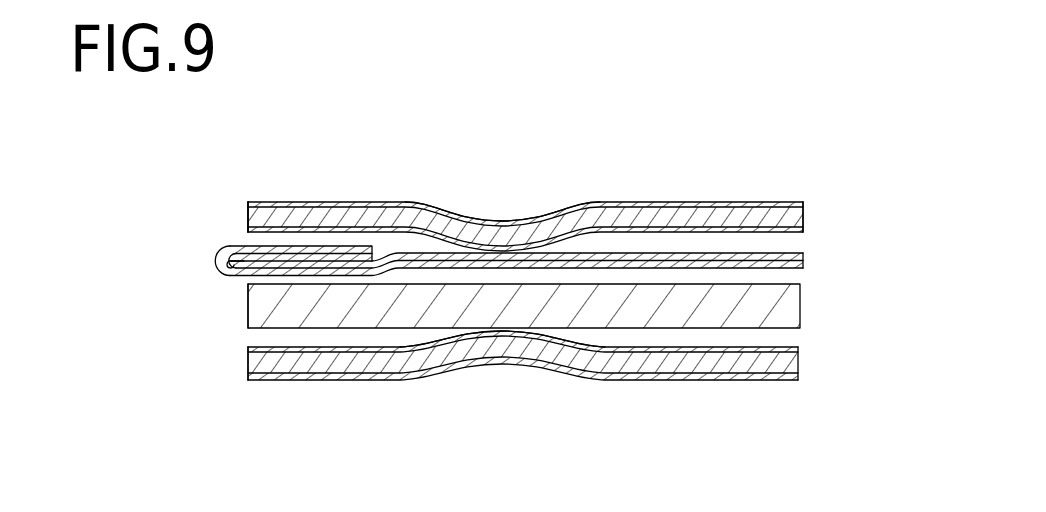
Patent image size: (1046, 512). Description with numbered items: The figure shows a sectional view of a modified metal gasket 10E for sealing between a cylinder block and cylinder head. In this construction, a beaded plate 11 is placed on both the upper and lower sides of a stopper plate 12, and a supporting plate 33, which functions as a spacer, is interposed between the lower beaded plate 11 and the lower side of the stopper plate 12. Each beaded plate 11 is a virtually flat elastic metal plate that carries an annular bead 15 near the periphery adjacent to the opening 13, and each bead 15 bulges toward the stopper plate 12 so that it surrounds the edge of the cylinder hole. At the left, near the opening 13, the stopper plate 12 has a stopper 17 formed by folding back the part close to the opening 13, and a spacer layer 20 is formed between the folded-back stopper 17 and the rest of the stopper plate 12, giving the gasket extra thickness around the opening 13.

The modified metal gasket 10E is at (784, 182).
The beaded plate 11 is at (805, 221).
The stopper plate 12 is at (803, 257).
The opening 13 is at (248, 217).
The annular bead 15 is at (505, 236).
The stopper 17 is at (338, 252).
The spacer layer 20 is at (303, 259).
The supporting plate 33 is at (800, 313).